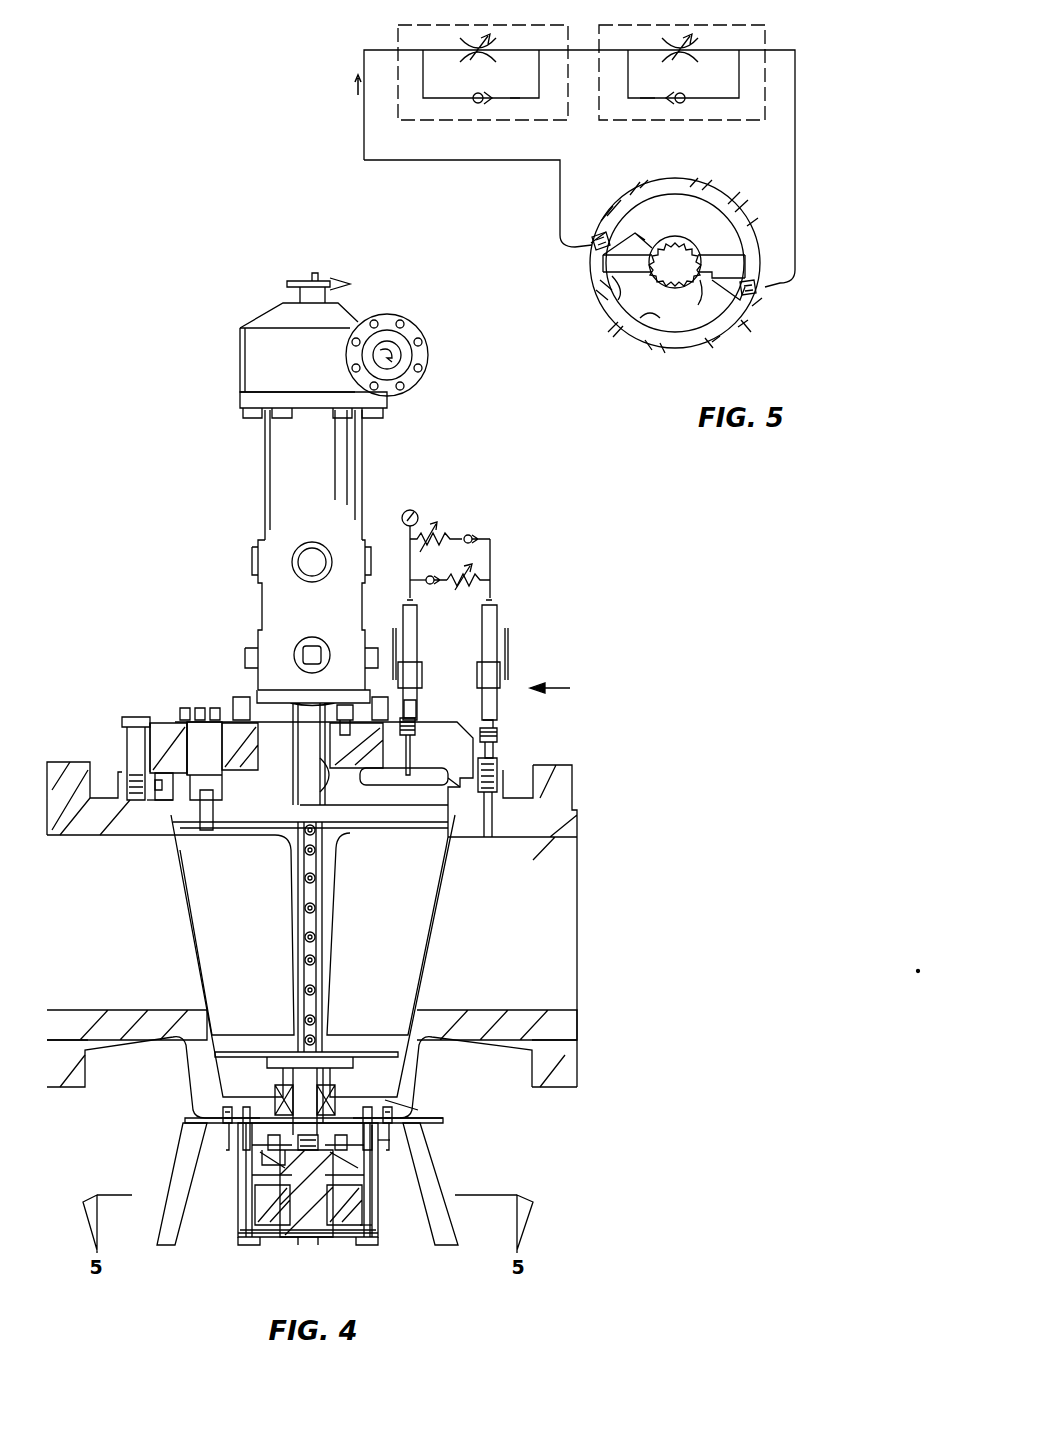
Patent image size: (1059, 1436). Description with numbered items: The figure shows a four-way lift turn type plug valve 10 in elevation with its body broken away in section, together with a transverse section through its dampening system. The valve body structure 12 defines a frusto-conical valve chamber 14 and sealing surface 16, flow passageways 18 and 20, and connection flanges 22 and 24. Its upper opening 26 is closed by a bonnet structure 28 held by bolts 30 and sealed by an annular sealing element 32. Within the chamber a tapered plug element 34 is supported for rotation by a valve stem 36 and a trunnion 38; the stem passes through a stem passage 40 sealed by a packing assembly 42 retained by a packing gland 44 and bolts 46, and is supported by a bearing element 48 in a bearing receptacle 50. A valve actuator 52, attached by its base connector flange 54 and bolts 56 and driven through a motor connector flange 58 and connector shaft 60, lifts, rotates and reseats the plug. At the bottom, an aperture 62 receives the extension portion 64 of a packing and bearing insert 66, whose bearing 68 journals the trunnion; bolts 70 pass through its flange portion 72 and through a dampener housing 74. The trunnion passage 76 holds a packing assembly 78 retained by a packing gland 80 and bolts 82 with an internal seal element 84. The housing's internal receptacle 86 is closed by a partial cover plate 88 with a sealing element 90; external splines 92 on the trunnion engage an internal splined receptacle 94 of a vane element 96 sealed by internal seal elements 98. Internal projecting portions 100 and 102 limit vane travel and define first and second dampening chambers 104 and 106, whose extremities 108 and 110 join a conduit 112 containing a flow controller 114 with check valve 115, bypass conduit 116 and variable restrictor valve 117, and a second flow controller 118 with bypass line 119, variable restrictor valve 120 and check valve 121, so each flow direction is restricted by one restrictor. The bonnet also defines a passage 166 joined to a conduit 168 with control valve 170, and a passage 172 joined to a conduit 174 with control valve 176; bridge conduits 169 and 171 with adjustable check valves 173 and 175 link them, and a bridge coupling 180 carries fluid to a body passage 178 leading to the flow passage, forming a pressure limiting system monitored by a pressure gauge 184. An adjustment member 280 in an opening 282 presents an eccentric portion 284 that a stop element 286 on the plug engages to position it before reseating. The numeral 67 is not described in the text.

In FIG. 4, the four-way lift turn type plug valve 10 is at (563, 687).
In FIG. 4, the valve body structure 12 is at (195, 1082).
In FIG. 4, the valve chamber 14 is at (225, 1045).
In FIG. 4, the frusto-conical sealing surface 16 is at (405, 1020).
In FIG. 4, the inlet and outlet passageway 18 is at (120, 1010).
In FIG. 4, the inlet and outlet passageway 20 is at (529, 1010).
In FIG. 4, the connection flange 22 is at (78, 745).
In FIG. 4, the connection flange 24 is at (575, 779).
In FIG. 4, the upper opening 26 is at (450, 790).
In FIG. 4, the bonnet structure 28 is at (175, 722).
In FIG. 4, the bolts 30 is at (120, 724).
In FIG. 4, the annular sealing element 32 is at (150, 792).
In FIG. 4, the plug element 34 is at (275, 870).
In FIG. 4, the valve stem 36 is at (296, 793).
In FIG. 4, the trunnion 38 is at (325, 1085).
In FIG. 4, the stem passage 40 is at (323, 790).
In FIG. 4, the packing assembly 42 is at (360, 772).
In FIG. 4, the packing gland 44 is at (262, 693).
In FIG. 4, the bolts 46 is at (392, 740).
In FIG. 4, the bearing element 48 is at (230, 773).
In FIG. 4, the bearing receptacle 50 is at (284, 762).
In FIG. 4, the valve actuator 52 is at (365, 497).
In FIG. 4, the base connector flange 54 is at (418, 722).
In FIG. 4, the bolts 56 is at (417, 700).
In FIG. 4, the motor connector flange 58 is at (415, 332).
In FIG. 4, the connector shaft 60 is at (400, 358).
In FIG. 4, the aperture 62 is at (223, 1112).
In FIG. 4, the extension portion 64 is at (405, 1114).
In FIG. 4, the packing and bearing insert 66 is at (433, 1184).
In FIG. 4, the lower seal 67 is at (385, 1142).
In FIG. 4, the bearing 68 is at (392, 1108).
In FIG. 4, the bolts 70 is at (243, 1240).
In FIG. 4, the flange portion 72 is at (200, 1140).
In FIG. 4, the dampener housing 74 is at (246, 1168).
In FIG. 5, the dampener housing 74 is at (705, 335).
In FIG. 4, the trunnion passage 76 is at (290, 1082).
In FIG. 4, the packing assembly 78 is at (370, 1170).
In FIG. 4, the packing gland 80 is at (370, 1197).
In FIG. 4, the bolts 82 is at (372, 1220).
In FIG. 4, the internal seal element 84 is at (262, 1157).
In FIG. 4, the internal receptacle 86 is at (345, 1237).
In FIG. 5, the internal receptacle 86 is at (630, 332).
In FIG. 4, the partial cover plate 88 is at (270, 1240).
In FIG. 4, the sealing element 90 is at (375, 1240).
In FIG. 4, the external splines 92 is at (300, 1237).
In FIG. 5, the external splines 92 is at (690, 240).
In FIG. 4, the internal splined receptacle 94 is at (310, 1237).
In FIG. 5, the internal splined receptacle 94 is at (676, 242).
In FIG. 4, the vane element 96 is at (262, 1202).
In FIG. 5, the vane element 96 is at (612, 276).
In FIG. 4, the internal seal element 98 is at (270, 1175).
In FIG. 5, the internal projecting portion 100 is at (614, 208).
In FIG. 5, the internal projecting portion 102 is at (722, 292).
In FIG. 5, the first dampening chamber 104 is at (733, 200).
In FIG. 5, the second dampening chamber 106 is at (690, 325).
In FIG. 5, the conduit extremity 108 is at (592, 247).
In FIG. 5, the conduit extremity 110 is at (760, 291).
In FIG. 5, the conduit 112 is at (560, 183).
In FIG. 5, the flow controller 114 is at (502, 13).
In FIG. 5, the check valve 115 is at (470, 104).
In FIG. 5, the bypass conduit 116 is at (505, 99).
In FIG. 5, the variable restrictor valve 117 is at (468, 42).
In FIG. 5, the second flow controller 118 is at (719, 13).
In FIG. 5, the bypass line 119 is at (648, 99).
In FIG. 5, the variable restrictor valve 120 is at (672, 42).
In FIG. 5, the check valve 121 is at (688, 102).
In FIG. 4, the passage 166 is at (414, 762).
In FIG. 4, the conduit 168 is at (416, 622).
In FIG. 4, the bridge conduit 169 is at (480, 580).
In FIG. 4, the control valve 170 is at (422, 670).
In FIG. 4, the bridge conduit 171 is at (448, 523).
In FIG. 4, the passage 172 is at (498, 735).
In FIG. 4, the adjustable check valve 173 is at (436, 576).
In FIG. 4, the conduit 174 is at (492, 618).
In FIG. 4, the adjustable check valve 175 is at (475, 536).
In FIG. 4, the control valve 176 is at (500, 667).
In FIG. 4, the passage 178 is at (495, 840).
In FIG. 4, the bridge coupling 180 is at (500, 765).
In FIG. 4, the pressure gauge 184 is at (420, 520).
In FIG. 4, the adjustment member 280 is at (215, 720).
In FIG. 4, the opening 282 is at (190, 720).
In FIG. 4, the eccentric portion 284 is at (175, 835).
In FIG. 4, the stop element 286 is at (205, 830).